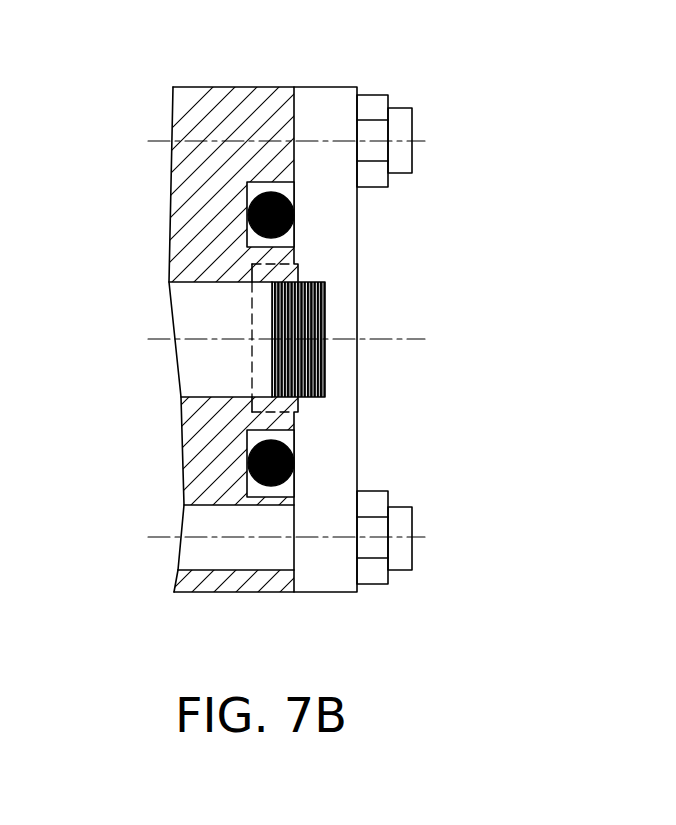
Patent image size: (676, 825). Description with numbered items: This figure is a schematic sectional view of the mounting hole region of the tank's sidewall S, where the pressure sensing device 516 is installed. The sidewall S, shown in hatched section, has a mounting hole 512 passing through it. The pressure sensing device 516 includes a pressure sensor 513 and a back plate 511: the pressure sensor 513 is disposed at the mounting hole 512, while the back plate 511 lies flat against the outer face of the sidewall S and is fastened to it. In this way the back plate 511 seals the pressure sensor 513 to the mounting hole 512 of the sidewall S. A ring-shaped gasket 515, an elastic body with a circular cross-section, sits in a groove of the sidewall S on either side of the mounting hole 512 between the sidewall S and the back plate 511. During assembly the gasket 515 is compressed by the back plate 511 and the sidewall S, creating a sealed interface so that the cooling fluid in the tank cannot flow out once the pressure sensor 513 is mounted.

The sidewall S is at (227, 122).
The back plate 511 is at (343, 221).
The mounting hole 512 is at (252, 312).
The pressure sensor 513 is at (325, 313).
The gasket 515 is at (250, 472).
The pressure sensing device 516 is at (402, 339).